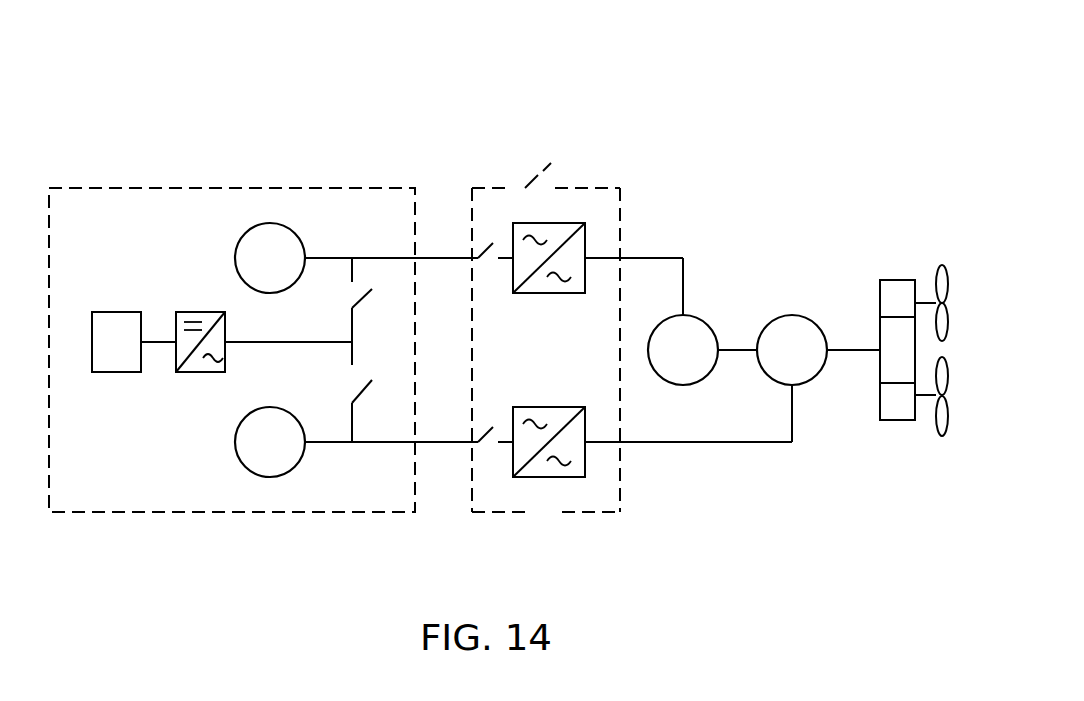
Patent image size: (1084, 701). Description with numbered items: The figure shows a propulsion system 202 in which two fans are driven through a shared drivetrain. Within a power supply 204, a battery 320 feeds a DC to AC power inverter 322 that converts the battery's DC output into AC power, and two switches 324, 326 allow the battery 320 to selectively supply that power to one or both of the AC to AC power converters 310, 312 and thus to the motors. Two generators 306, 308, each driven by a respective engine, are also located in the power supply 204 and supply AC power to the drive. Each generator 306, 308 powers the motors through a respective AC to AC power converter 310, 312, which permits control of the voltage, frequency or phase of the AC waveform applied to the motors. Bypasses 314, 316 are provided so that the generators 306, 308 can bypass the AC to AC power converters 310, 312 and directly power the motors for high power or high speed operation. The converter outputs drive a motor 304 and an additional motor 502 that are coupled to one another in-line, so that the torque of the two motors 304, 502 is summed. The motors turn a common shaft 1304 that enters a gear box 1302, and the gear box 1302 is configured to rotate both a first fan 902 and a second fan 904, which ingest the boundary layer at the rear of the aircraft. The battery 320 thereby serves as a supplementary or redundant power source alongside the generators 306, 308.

The propulsion system 202 is at (690, 72).
The power supply 204 is at (131, 186).
The motor 304 is at (792, 315).
The generator 306 is at (269, 223).
The generator 308 is at (269, 478).
The AC to AC power converter 310 is at (566, 223).
The AC to AC power converter 312 is at (548, 407).
The bypass 314 is at (505, 187).
The bypass 316 is at (611, 514).
The battery 320 is at (114, 312).
The DC to AC power inverter 322 is at (199, 312).
The switch 324 is at (360, 298).
The switch 326 is at (366, 395).
The additional motor 502 is at (714, 322).
The first fan 902 is at (940, 264).
The second fan 904 is at (940, 437).
The gear box 1302 is at (879, 370).
The common shaft 1304 is at (851, 346).